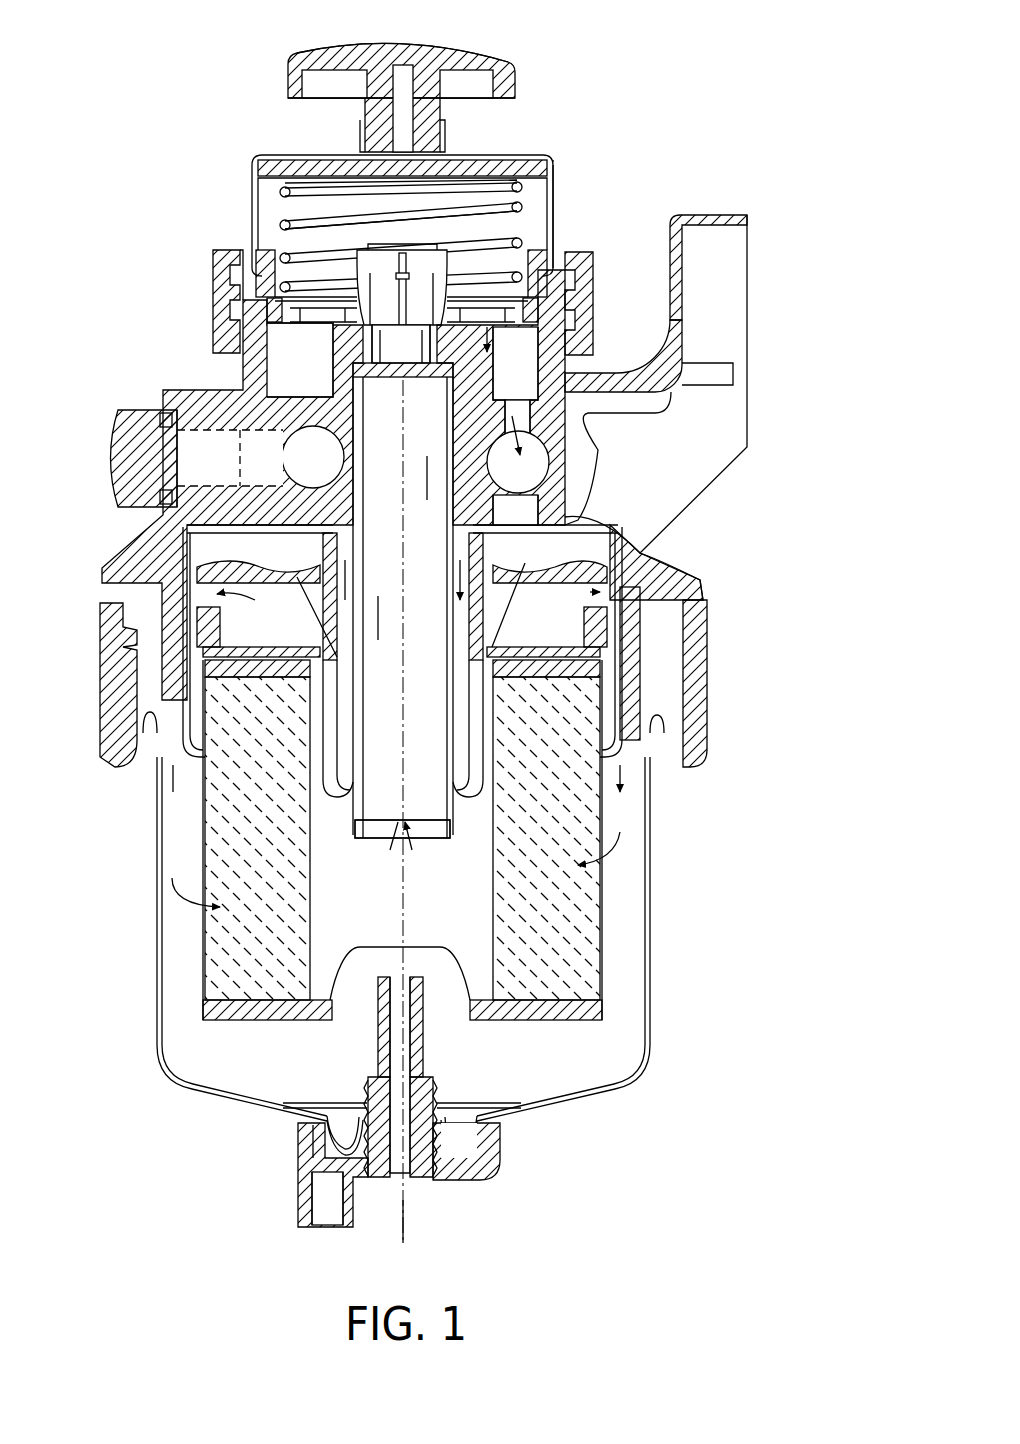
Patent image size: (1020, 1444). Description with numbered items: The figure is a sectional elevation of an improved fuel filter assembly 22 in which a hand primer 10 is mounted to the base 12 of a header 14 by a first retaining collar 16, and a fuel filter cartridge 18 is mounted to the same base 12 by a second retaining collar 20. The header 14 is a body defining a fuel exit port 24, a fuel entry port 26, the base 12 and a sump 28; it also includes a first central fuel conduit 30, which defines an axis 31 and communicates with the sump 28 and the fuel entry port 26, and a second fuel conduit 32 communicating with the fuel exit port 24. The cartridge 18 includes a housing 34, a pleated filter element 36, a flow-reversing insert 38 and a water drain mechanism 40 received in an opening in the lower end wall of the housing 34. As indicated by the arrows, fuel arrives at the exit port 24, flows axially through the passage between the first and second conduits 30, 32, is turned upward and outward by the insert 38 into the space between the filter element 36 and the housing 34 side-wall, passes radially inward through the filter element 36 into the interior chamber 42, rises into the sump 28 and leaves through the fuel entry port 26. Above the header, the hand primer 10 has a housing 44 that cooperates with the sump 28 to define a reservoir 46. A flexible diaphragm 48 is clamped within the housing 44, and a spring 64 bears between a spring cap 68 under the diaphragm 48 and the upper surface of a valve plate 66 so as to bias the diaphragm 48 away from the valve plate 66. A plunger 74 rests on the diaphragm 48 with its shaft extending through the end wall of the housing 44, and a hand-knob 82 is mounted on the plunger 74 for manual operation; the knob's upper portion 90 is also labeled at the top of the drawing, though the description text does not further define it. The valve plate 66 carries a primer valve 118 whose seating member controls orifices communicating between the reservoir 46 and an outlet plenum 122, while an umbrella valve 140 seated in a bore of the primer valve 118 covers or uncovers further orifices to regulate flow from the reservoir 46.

The hand primer 10 is at (585, 150).
The base 12 is at (749, 313).
The header 14 is at (748, 271).
The first retaining collar 16 is at (215, 280).
The fuel filter cartridge 18 is at (651, 890).
The second retaining collar 20 is at (708, 690).
The fuel filter assembly 22 is at (165, 162).
The fuel exit port 24 is at (297, 470).
The fuel entry port 26 is at (502, 475).
The sump 28 is at (318, 381).
The first central fuel conduit 30 is at (358, 828).
The axis 31 is at (407, 1207).
The second fuel conduit 32 is at (338, 638).
The housing 34 is at (652, 1010).
The filter element 36 is at (553, 985).
The flow-reversing insert 38 is at (590, 600).
The water drain mechanism 40 is at (507, 1150).
The interior chamber 42 is at (428, 907).
The housing 44 is at (254, 160).
The reservoir 46 is at (526, 226).
The diaphragm 48 is at (555, 184).
The spring 64 is at (256, 230).
The valve plate 66 is at (584, 268).
The spring cap 68 is at (514, 178).
The plunger 74 is at (362, 122).
The hand-knob 82 is at (370, 55).
The knob grip 90 is at (470, 54).
The primer valve 118 is at (542, 270).
The outlet plenum 122 is at (480, 382).
The umbrella valve 140 is at (453, 234).